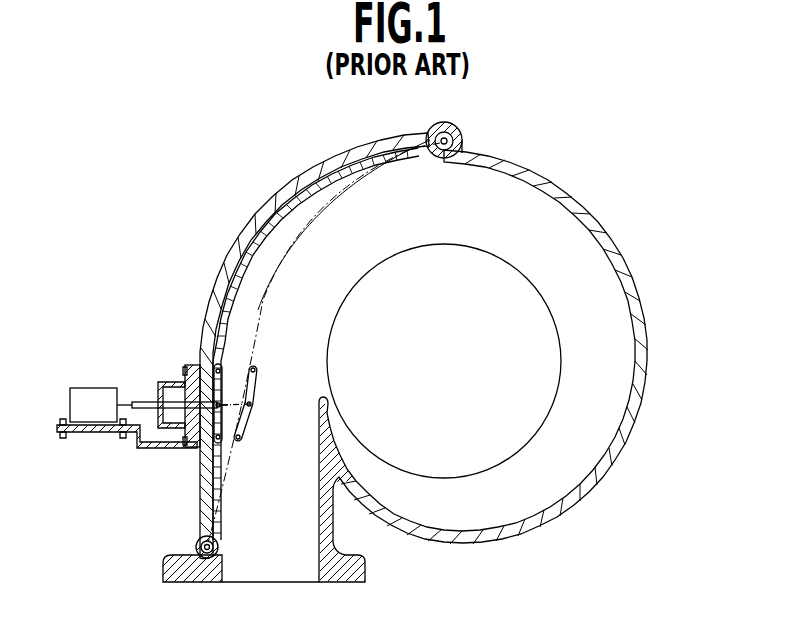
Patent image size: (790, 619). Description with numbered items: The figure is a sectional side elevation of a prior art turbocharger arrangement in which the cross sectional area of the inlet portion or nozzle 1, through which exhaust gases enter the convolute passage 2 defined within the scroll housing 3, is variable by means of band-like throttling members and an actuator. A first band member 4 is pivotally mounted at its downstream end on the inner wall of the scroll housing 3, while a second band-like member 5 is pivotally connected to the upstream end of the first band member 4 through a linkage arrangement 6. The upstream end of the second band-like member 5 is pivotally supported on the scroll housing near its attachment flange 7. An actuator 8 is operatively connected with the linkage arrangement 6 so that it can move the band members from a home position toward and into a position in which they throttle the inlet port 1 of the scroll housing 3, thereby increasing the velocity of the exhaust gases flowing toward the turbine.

The inlet portion or nozzle 1 is at (288, 455).
The convolute passage 2 is at (603, 445).
The scroll housing 3 is at (580, 505).
The first band member 4 is at (323, 217).
The second band-like member 5 is at (220, 525).
The linkage arrangement 6 is at (257, 388).
The attachment flange 7 is at (362, 565).
The actuator 8 is at (83, 387).